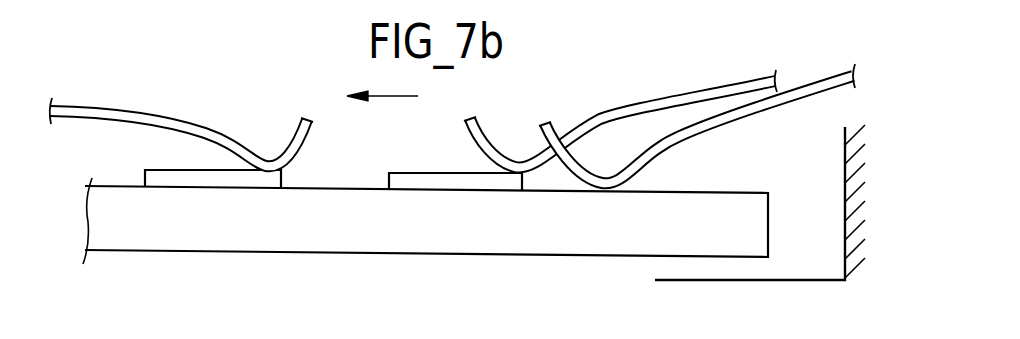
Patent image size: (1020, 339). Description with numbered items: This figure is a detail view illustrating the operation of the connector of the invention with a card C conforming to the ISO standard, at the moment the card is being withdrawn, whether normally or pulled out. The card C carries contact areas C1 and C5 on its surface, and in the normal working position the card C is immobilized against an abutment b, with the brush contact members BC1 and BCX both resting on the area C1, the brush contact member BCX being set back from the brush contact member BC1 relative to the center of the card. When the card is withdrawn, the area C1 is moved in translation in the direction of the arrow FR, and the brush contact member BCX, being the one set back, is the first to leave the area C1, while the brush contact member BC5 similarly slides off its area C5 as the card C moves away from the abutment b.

The brush contact member BC5 is at (190, 121).
The brush contact member BC1 is at (603, 113).
The brush contact member BCX is at (703, 120).
The area C5 is at (216, 181).
The area C1 is at (472, 181).
The card C is at (291, 230).
The abutment b is at (856, 229).
The arrow FR is at (387, 82).